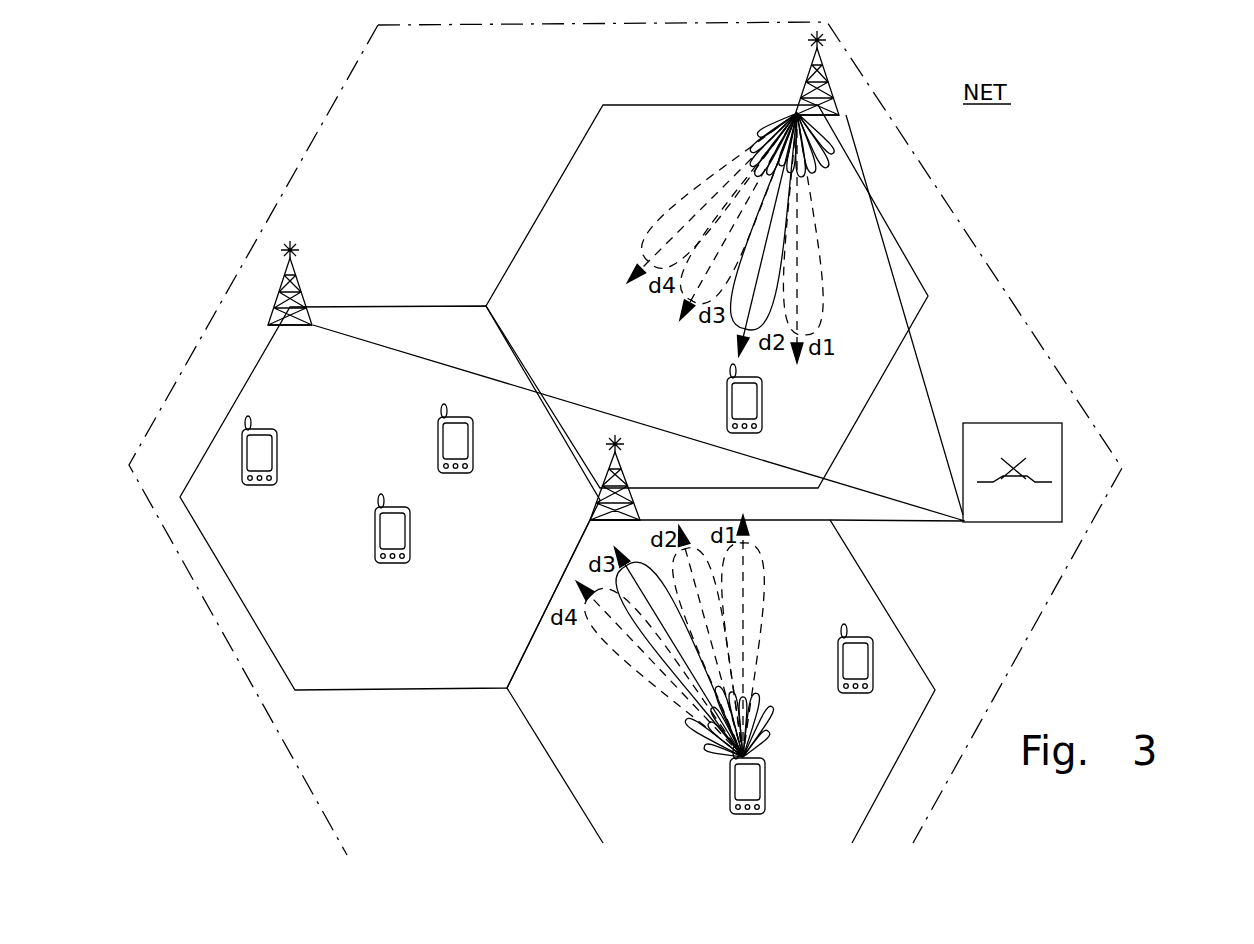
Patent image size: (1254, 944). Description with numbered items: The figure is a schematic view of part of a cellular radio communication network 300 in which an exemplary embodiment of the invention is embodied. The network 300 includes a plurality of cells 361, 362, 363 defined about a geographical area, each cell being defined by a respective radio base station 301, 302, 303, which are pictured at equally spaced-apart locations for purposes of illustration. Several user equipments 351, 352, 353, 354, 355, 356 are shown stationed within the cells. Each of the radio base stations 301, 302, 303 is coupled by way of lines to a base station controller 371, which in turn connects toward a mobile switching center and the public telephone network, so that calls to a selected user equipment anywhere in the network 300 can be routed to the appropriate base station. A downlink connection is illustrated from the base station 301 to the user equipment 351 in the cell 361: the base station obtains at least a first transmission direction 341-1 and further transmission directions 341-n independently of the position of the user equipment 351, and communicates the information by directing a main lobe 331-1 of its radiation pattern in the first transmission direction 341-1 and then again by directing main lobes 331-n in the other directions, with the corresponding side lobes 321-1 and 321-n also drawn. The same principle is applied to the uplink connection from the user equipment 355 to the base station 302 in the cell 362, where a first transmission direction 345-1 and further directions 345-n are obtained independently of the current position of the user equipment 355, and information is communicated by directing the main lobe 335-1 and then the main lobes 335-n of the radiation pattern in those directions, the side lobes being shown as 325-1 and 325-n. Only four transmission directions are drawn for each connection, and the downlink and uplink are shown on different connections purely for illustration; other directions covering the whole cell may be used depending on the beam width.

The cellular radio communication network 300 is at (1043, 352).
The radio base station 301 is at (798, 78).
The radio base station 302 is at (668, 495).
The radio base station 303 is at (342, 278).
The side lobes 321-n is at (765, 125).
The side lobe 321-1 is at (830, 157).
The main lobes 331-n is at (663, 218).
The main lobe 331-1 is at (860, 280).
The transmission directions 341-n is at (634, 284).
The first transmission direction 341-1 is at (797, 366).
The side lobes 325-n is at (700, 745).
The side lobe 325-1 is at (763, 705).
The main lobes 335-n is at (646, 686).
The main lobe 335-1 is at (766, 620).
The transmission directions 345-n is at (573, 585).
The first transmission direction 345-1 is at (783, 522).
The user equipment 351 is at (724, 388).
The user equipment 352 is at (375, 553).
The user equipment 353 is at (470, 474).
The user equipment 354 is at (277, 464).
The user equipment 355 is at (807, 797).
The user equipment 356 is at (918, 662).
The cell 361 is at (535, 228).
The cell 362 is at (577, 802).
The cell 363 is at (462, 306).
The base station controller 371 is at (1058, 524).